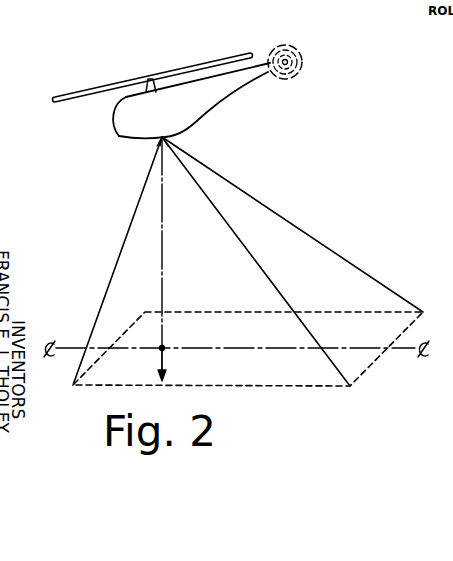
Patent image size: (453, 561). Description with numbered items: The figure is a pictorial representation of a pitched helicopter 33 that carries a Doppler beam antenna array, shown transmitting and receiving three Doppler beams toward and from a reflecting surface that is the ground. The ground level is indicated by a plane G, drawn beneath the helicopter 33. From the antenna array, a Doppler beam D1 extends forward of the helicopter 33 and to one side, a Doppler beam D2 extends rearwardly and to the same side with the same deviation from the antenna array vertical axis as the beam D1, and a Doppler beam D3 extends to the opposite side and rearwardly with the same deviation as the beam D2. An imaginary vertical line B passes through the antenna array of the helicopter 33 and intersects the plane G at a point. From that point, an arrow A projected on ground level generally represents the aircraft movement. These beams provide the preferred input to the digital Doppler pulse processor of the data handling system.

The pitched helicopter 33 is at (121, 136).
The imaginary vertical line B is at (162, 233).
The Doppler beam D1 is at (117, 259).
The Doppler beam D2 is at (263, 268).
The Doppler beam D3 is at (298, 228).
The plane G is at (277, 373).
The arrow A is at (158, 355).